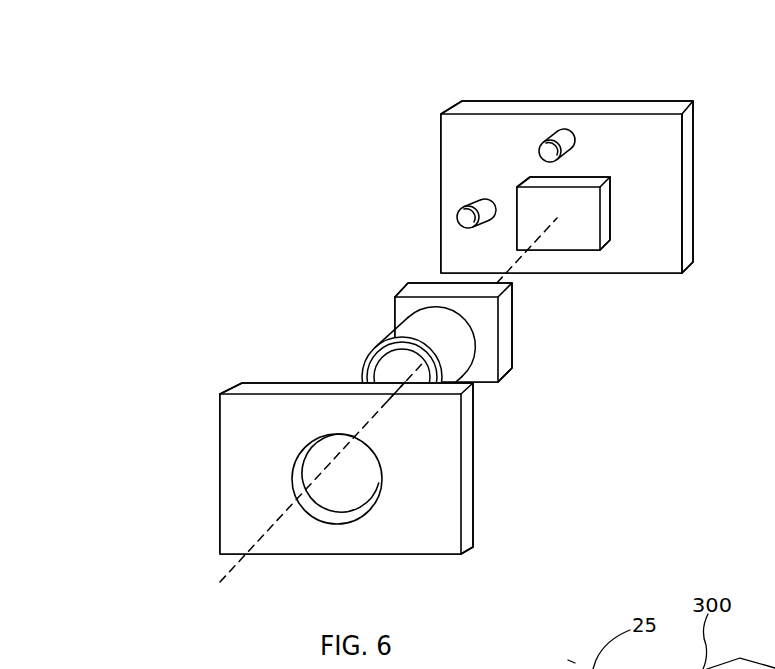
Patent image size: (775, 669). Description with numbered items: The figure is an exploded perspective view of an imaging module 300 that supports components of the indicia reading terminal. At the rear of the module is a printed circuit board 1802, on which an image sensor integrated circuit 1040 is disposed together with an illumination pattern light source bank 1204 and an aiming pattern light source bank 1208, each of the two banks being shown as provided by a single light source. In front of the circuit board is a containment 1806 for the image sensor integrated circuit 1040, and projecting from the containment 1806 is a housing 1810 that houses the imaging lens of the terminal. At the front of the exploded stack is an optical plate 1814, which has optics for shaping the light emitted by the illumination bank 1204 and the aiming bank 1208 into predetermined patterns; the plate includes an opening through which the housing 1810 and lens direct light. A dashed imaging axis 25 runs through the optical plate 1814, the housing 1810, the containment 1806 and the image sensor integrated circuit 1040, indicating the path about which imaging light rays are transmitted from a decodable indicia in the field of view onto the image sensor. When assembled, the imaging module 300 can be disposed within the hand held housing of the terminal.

The imaging module 300 is at (688, 71).
The printed circuit board 1802 is at (673, 197).
The aiming pattern light source bank 1208 is at (556, 133).
The illumination pattern light source bank 1204 is at (478, 207).
The image sensor integrated circuit 1040 is at (605, 235).
The containment 1806 is at (505, 357).
The housing 1810 is at (457, 368).
The optical plate 1814 is at (455, 533).
The imaging axis 25 is at (240, 563).